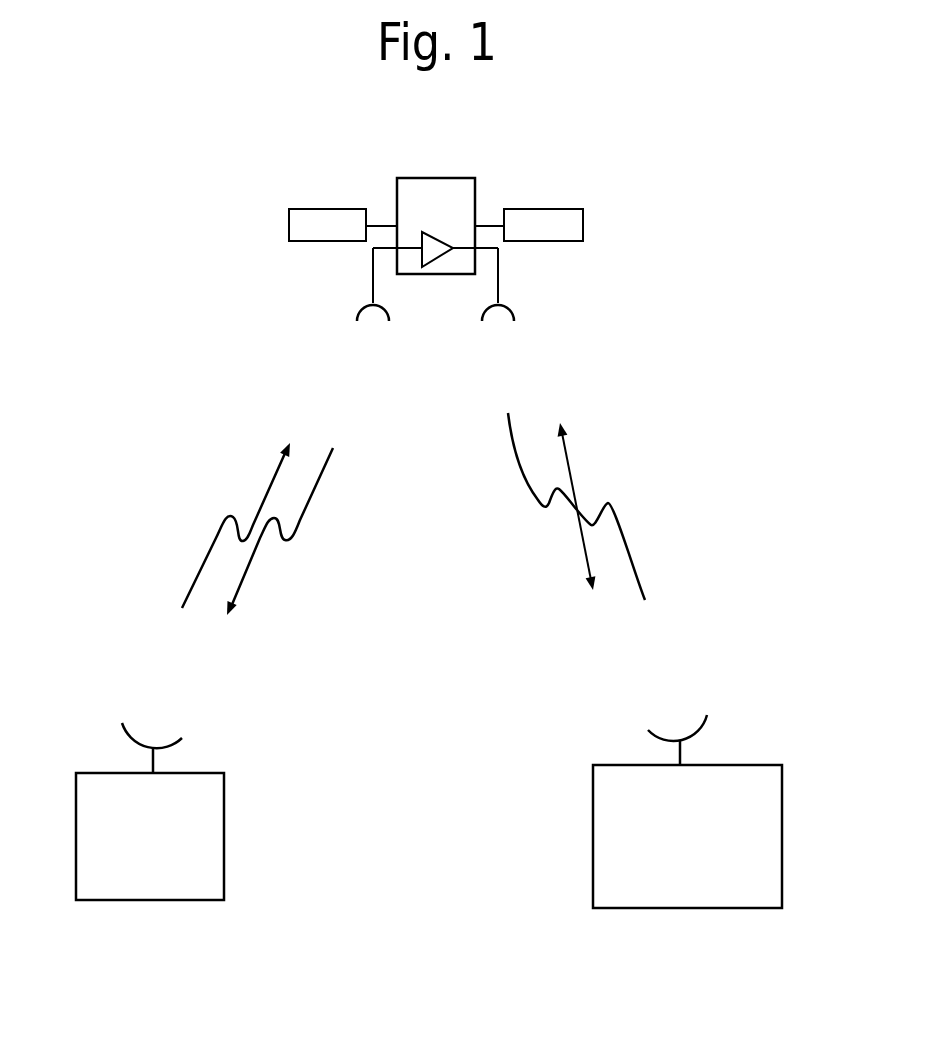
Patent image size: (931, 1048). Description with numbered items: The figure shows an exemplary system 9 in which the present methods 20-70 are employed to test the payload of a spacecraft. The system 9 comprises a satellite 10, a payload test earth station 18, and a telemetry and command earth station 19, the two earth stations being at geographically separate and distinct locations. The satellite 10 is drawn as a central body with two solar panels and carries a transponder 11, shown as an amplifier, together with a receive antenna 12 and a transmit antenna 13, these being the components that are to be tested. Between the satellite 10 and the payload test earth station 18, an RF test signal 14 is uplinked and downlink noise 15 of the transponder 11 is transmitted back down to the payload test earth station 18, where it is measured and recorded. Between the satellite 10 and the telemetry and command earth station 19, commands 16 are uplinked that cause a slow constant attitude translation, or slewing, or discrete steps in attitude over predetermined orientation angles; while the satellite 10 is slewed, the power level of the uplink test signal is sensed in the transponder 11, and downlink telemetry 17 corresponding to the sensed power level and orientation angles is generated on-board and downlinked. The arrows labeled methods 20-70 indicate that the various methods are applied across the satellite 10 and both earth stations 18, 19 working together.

The system 9 is at (150, 228).
The satellite 10 is at (423, 178).
The transponder 11 is at (436, 237).
The receive antenna 12 is at (361, 311).
The transmit antenna 13 is at (510, 311).
The RF test signal 14 is at (212, 543).
The downlink noise 15 is at (293, 535).
The commands 16 is at (620, 512).
The downlink telemetry 17 is at (538, 507).
The payload test earth station 18 is at (98, 773).
The telemetry and command earth station 19 is at (615, 765).
The methods 20-70 is at (470, 737).